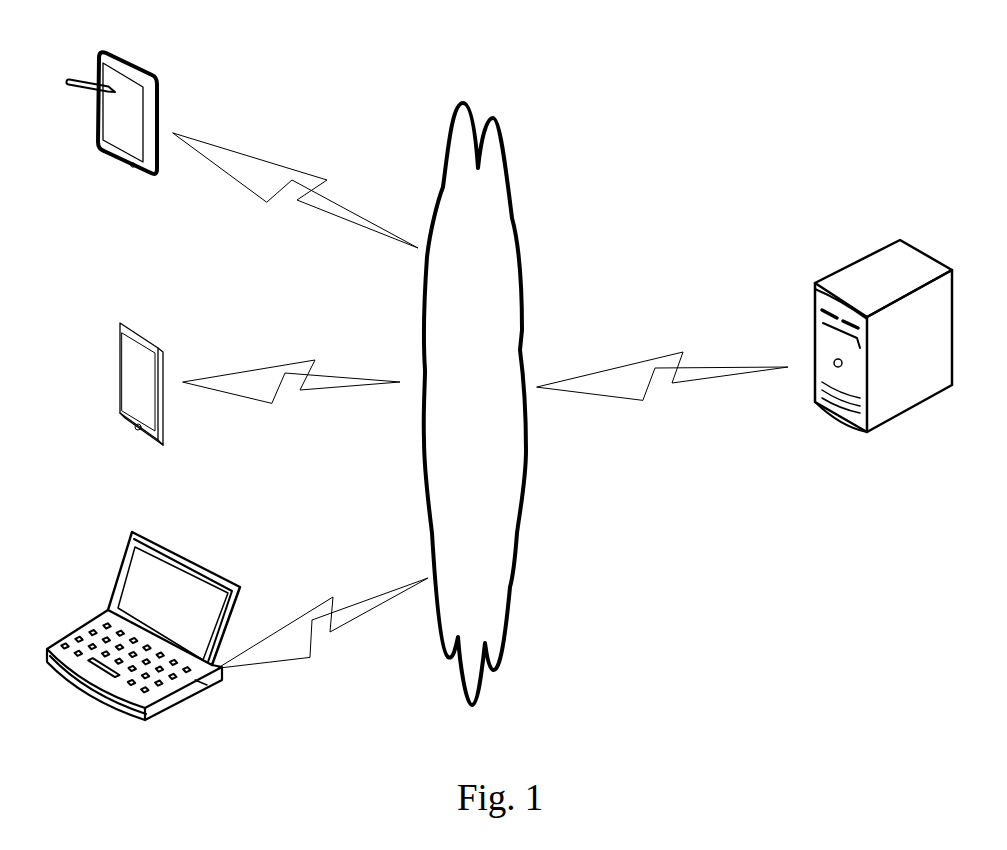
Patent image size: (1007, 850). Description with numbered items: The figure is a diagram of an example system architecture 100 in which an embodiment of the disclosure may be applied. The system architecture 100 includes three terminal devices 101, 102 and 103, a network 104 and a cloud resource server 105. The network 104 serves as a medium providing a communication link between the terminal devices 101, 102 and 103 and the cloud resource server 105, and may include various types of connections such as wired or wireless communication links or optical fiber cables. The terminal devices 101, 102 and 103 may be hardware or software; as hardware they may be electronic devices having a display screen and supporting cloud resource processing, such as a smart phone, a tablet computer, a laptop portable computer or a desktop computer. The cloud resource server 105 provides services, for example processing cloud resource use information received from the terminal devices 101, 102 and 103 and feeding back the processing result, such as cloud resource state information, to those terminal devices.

The system architecture 100 is at (872, 34).
The terminal device 101 is at (157, 100).
The terminal device 102 is at (165, 363).
The terminal device 103 is at (178, 552).
The network 104 is at (527, 285).
The cloud resource server 105 is at (825, 417).